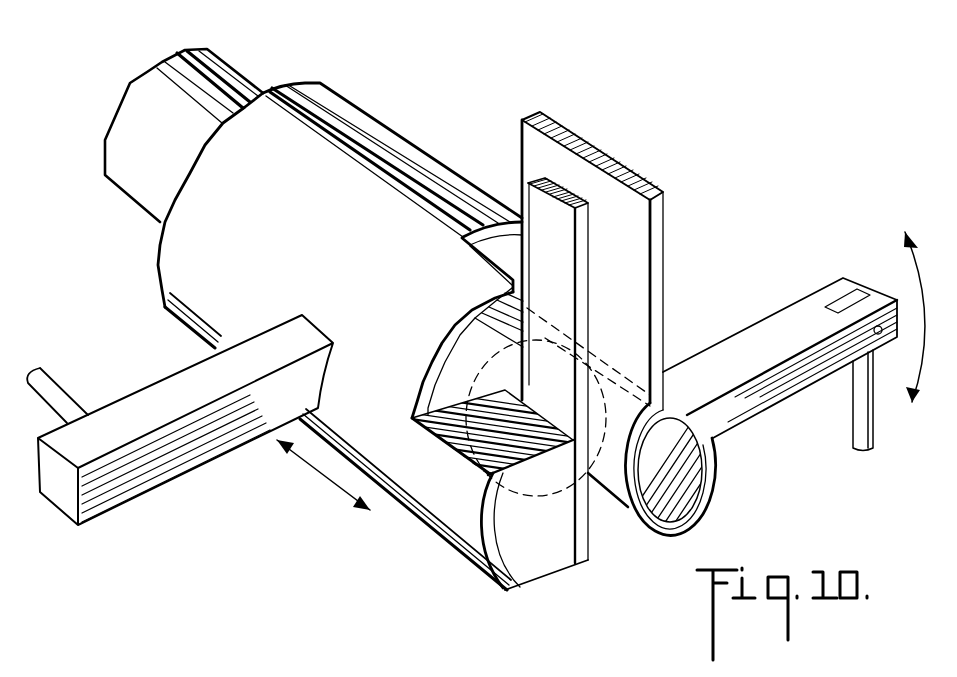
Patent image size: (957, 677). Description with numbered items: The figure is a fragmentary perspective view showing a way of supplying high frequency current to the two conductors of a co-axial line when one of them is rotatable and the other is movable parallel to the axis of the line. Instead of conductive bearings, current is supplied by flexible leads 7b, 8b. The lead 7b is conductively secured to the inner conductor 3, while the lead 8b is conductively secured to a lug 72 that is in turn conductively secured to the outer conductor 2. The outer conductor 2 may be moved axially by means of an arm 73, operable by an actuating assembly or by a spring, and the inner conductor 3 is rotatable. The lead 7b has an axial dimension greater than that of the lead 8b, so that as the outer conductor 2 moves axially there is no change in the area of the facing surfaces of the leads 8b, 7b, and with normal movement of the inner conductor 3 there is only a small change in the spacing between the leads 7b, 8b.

The outer conductor 2 is at (443, 177).
The inner conductor 3 is at (659, 528).
The lead 7b is at (657, 256).
The lead 8b is at (582, 273).
The lug 72 is at (548, 567).
The arm 73 is at (158, 473).